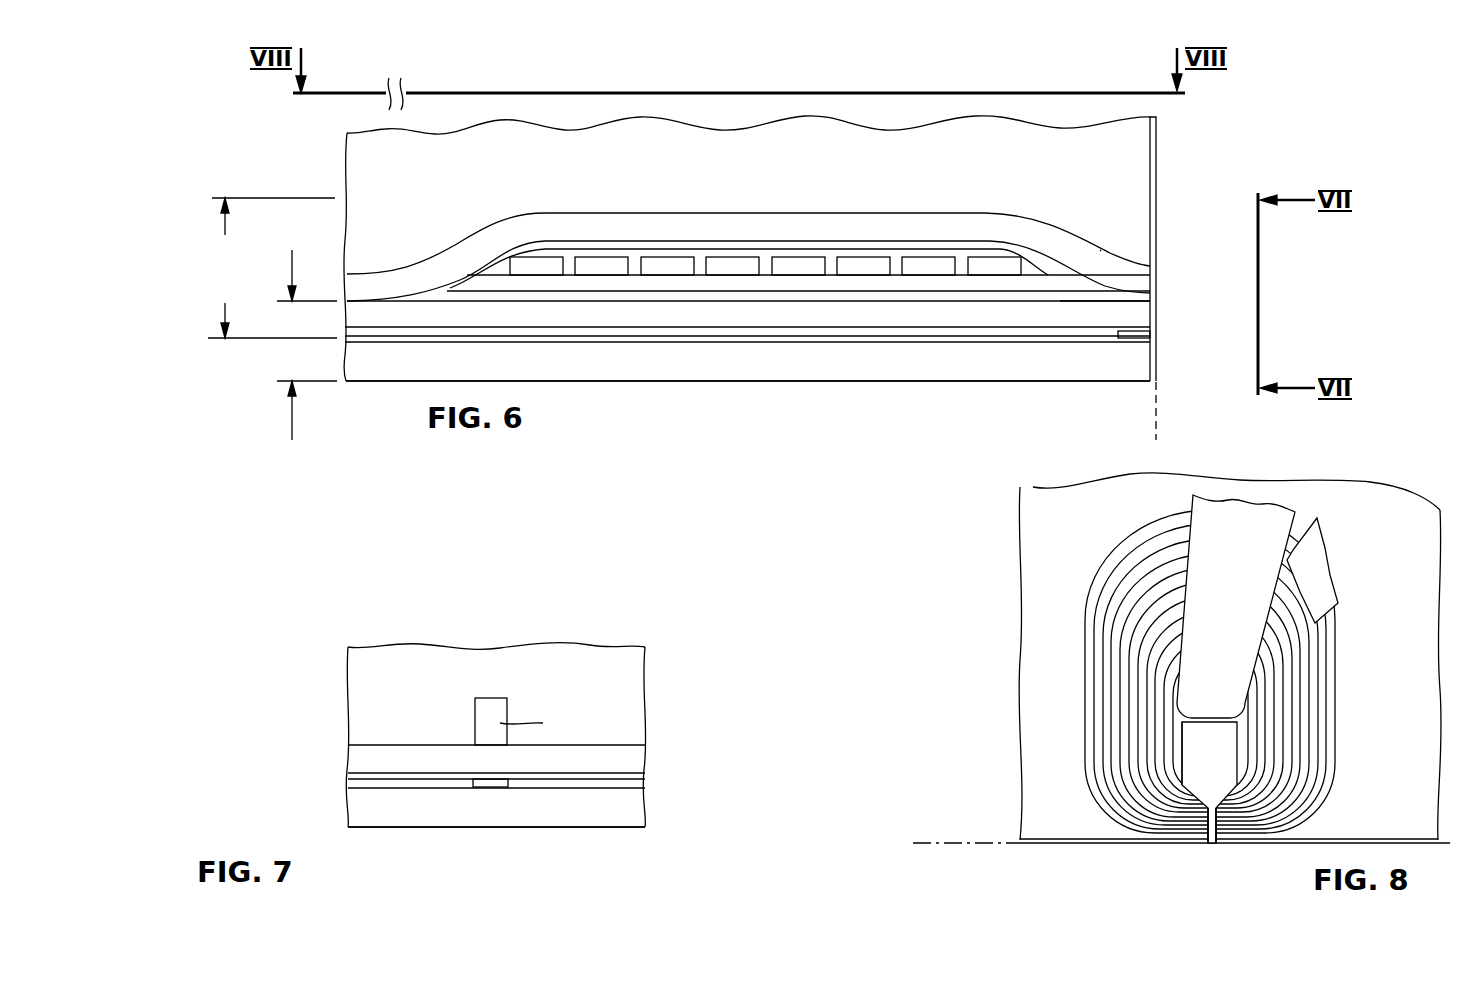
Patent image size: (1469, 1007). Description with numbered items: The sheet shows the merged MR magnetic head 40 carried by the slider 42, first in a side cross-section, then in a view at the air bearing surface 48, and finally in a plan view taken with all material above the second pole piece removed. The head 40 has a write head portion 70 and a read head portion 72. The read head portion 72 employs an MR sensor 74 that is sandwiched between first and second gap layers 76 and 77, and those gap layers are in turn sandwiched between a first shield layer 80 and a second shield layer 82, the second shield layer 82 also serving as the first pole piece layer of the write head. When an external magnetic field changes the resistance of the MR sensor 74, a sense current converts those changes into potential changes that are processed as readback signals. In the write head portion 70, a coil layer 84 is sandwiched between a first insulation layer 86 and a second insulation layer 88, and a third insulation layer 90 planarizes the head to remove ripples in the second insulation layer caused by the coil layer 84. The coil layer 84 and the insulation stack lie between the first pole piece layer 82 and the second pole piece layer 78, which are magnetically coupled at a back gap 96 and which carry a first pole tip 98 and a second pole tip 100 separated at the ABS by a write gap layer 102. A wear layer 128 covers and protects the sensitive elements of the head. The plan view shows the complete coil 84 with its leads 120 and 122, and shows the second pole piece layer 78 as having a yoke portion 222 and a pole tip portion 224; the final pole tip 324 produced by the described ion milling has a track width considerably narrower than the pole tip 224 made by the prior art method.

In FIG. 6, the magnetic head 40 is at (333, 139).
In FIG. 7, the magnetic head 40 is at (670, 654).
In FIG. 8, the magnetic head 40 is at (1352, 647).
In FIG. 6, the slider 42 is at (1133, 143).
In FIG. 7, the slider 42 is at (357, 670).
In FIG. 6, the air bearing surface 48 is at (1203, 411).
In FIG. 8, the air bearing surface 48 is at (965, 840).
In FIG. 6, the write head portion 70 is at (264, 268).
In FIG. 6, the read head portion 72 is at (299, 449).
In FIG. 6, the MR sensor 74 is at (1143, 335).
In FIG. 7, the MR sensor 74 is at (490, 786).
In FIG. 6, the first gap layer 76 is at (815, 342).
In FIG. 7, the first gap layer 76 is at (403, 787).
In FIG. 6, the second gap layer 77 is at (780, 327).
In FIG. 7, the second gap layer 77 is at (608, 777).
In FIG. 6, the second pole piece layer 78 is at (893, 223).
In FIG. 8, the second pole piece layer 78 is at (1222, 770).
In FIG. 6, the first shield layer 80 is at (892, 367).
In FIG. 7, the first shield layer 80 is at (637, 812).
In FIG. 6, the second shield layer 82 is at (993, 315).
In FIG. 7, the second shield layer 82 is at (353, 762).
In FIG. 6, the coil layer 84 is at (797, 263).
In FIG. 8, the coil layer 84 is at (1307, 741).
In FIG. 6, the first insulation layer 86 is at (673, 285).
In FIG. 6, the second insulation layer 88 is at (1037, 267).
In FIG. 6, the third insulation layer 90 is at (573, 242).
In FIG. 6, the back gap 96 is at (382, 270).
In FIG. 6, the first pole tip 98 is at (1150, 312).
In FIG. 6, the second pole tip 100 is at (1143, 274).
In FIG. 7, the second pole tip 100 is at (495, 703).
In FIG. 6, the write gap layer 102 is at (1150, 293).
In FIG. 7, the write gap layer 102 is at (490, 740).
In FIG. 8, the lead 120 is at (1237, 601).
In FIG. 8, the lead 122 is at (1323, 560).
In FIG. 6, the wear layer 128 is at (1157, 187).
In FIG. 8, the wear layer 128 is at (1040, 845).
In FIG. 8, the yoke portion 222 is at (1182, 735).
In FIG. 8, the pole tip portion 224 is at (1205, 823).
In FIG. 8, the final pole tip 324 is at (1212, 825).